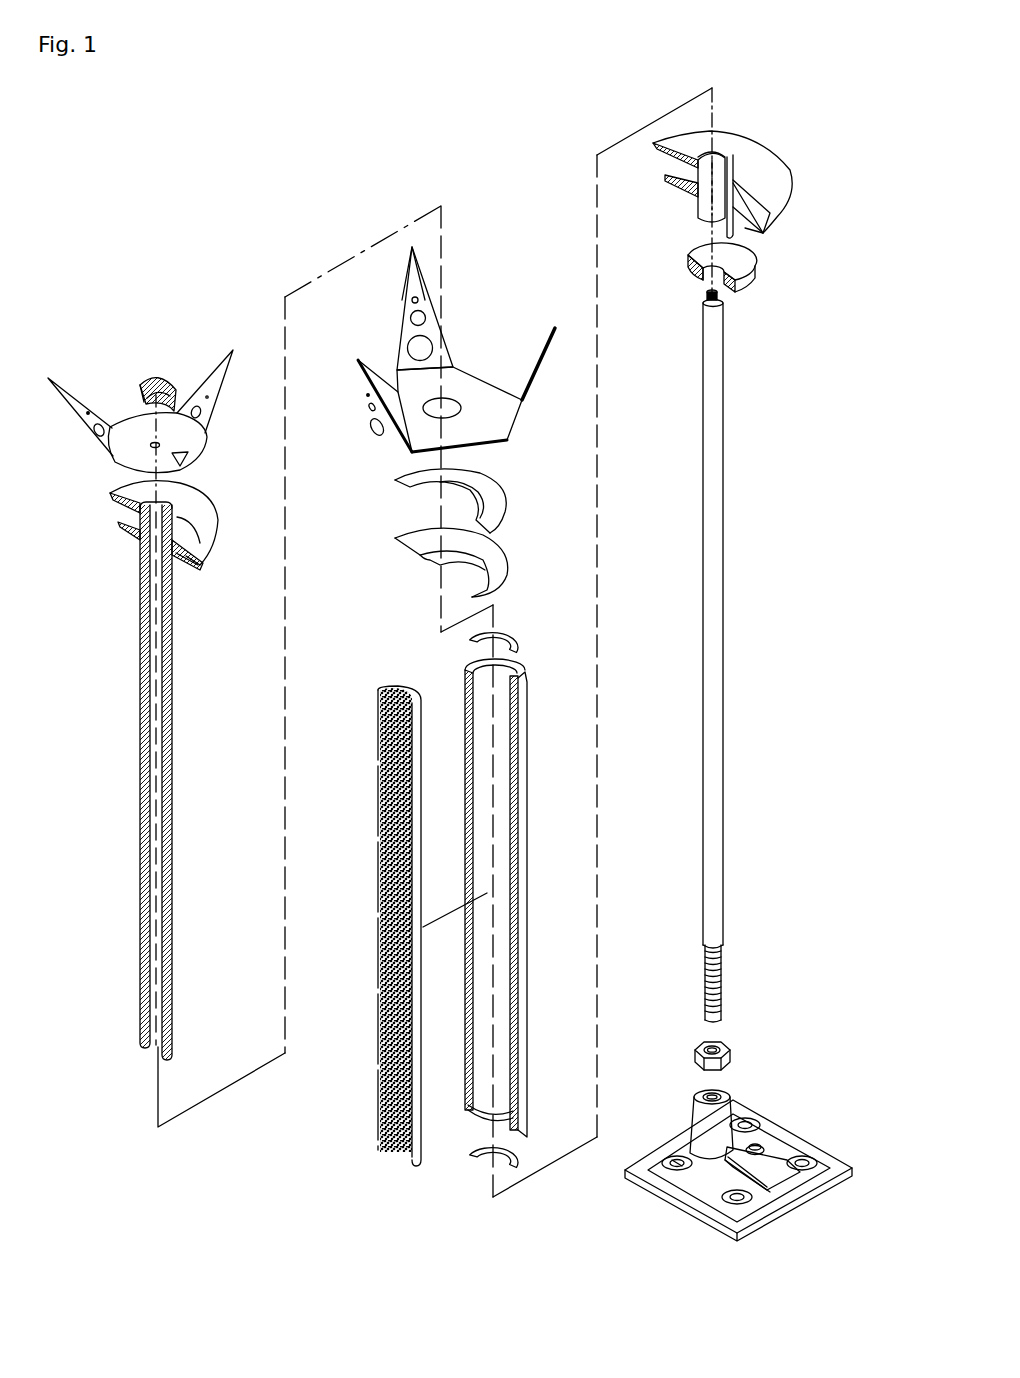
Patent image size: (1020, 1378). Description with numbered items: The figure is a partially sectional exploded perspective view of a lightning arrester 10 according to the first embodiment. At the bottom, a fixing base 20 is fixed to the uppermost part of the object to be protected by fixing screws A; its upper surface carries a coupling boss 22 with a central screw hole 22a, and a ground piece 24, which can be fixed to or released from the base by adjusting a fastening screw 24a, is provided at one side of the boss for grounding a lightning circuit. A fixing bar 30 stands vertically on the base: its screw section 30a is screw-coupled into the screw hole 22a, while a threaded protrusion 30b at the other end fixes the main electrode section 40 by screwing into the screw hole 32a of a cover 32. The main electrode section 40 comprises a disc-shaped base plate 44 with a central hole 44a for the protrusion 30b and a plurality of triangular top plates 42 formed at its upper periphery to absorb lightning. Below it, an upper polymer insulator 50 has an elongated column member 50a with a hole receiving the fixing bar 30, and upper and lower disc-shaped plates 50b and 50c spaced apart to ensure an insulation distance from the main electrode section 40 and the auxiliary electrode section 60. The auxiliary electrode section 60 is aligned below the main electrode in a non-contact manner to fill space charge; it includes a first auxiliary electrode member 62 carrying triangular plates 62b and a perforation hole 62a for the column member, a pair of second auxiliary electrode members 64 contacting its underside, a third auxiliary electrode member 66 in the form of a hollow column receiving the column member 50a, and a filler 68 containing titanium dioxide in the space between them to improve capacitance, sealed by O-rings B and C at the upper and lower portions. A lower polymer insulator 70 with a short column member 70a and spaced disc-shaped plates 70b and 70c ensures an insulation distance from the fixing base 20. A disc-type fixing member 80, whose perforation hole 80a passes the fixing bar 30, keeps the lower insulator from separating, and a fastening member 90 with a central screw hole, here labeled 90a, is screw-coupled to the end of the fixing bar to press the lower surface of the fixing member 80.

The lightning arrester 10 is at (207, 207).
The fixing base 20 is at (820, 1137).
The coupling boss 22 is at (724, 1093).
The screw hole 22a is at (702, 1098).
The ground piece 24 is at (785, 1173).
The fastening screw 24a is at (757, 1145).
The fixing bar 30 is at (724, 560).
The screw section 30a is at (722, 970).
The protrusion 30b is at (722, 297).
The cover 32 is at (165, 380).
The screw hole 32a is at (143, 392).
The main electrode section 40 is at (218, 443).
The triangular top plates 42 is at (72, 408).
The base plate 44 is at (112, 470).
The hole 44a is at (148, 440).
The upper polymer insulator 50 is at (133, 797).
The elongated column member 50a is at (178, 790).
The upper disc-shaped plate 50b is at (216, 512).
The lower disc-shaped plate 50c is at (206, 558).
The auxiliary electrode section 60 is at (365, 425).
The first auxiliary electrode member 62 is at (473, 398).
The perforation hole 62a is at (445, 400).
The triangular plates 62b is at (415, 283).
The second auxiliary electrode members 64 is at (515, 508).
The third auxiliary electrode member 66 is at (522, 818).
The filler 68 is at (380, 1116).
The lower polymer insulator 70 is at (765, 133).
The short column member 70a is at (698, 217).
The upper disc-shaped plate 70b is at (662, 150).
The lower disc-shaped plate 70c is at (668, 178).
The disc-type fixing member 80 is at (752, 265).
The perforation hole 80a is at (690, 274).
The fastening member 90 is at (732, 1053).
The nut hole 90a is at (703, 1047).
The fixing screws A is at (680, 1165).
The O-ring B is at (520, 645).
The O-ring C is at (492, 1163).